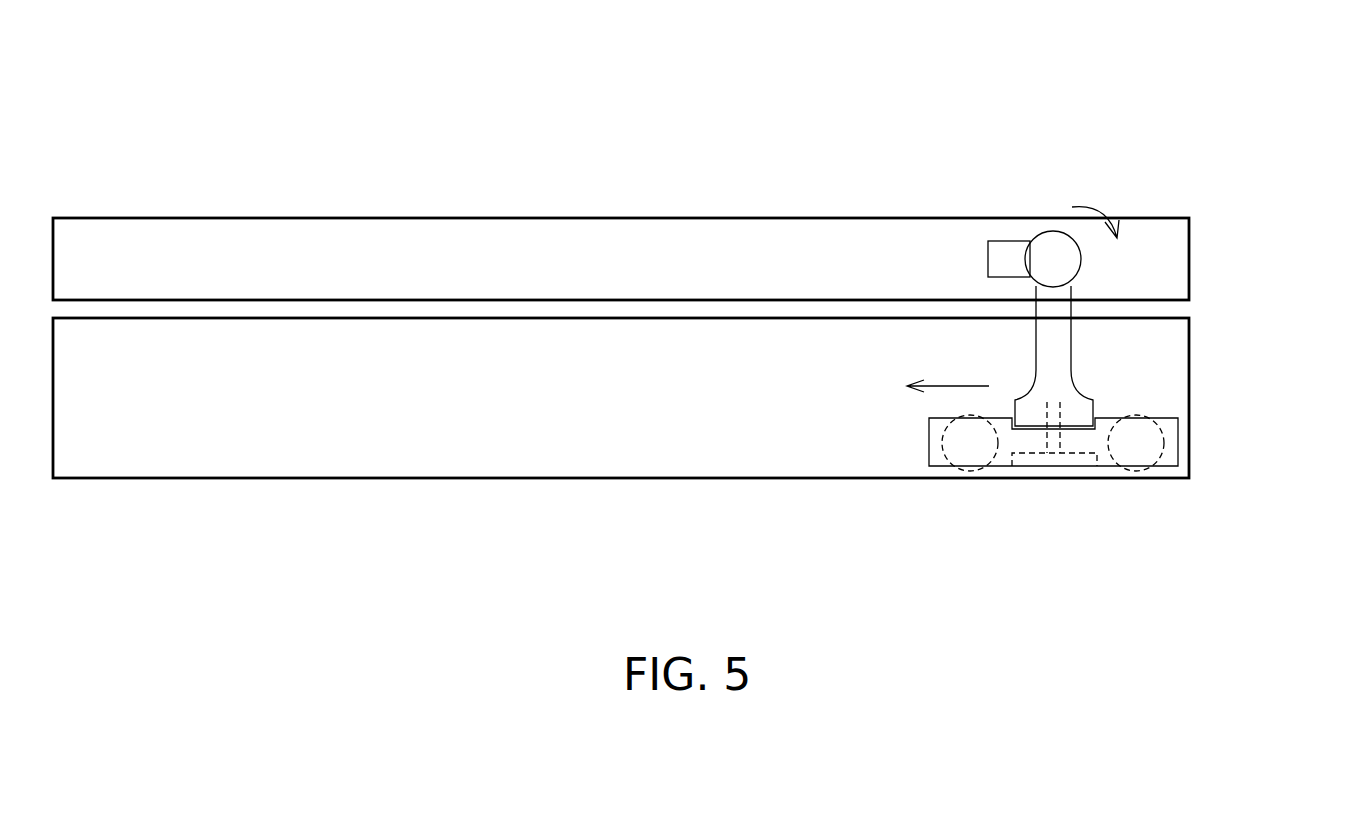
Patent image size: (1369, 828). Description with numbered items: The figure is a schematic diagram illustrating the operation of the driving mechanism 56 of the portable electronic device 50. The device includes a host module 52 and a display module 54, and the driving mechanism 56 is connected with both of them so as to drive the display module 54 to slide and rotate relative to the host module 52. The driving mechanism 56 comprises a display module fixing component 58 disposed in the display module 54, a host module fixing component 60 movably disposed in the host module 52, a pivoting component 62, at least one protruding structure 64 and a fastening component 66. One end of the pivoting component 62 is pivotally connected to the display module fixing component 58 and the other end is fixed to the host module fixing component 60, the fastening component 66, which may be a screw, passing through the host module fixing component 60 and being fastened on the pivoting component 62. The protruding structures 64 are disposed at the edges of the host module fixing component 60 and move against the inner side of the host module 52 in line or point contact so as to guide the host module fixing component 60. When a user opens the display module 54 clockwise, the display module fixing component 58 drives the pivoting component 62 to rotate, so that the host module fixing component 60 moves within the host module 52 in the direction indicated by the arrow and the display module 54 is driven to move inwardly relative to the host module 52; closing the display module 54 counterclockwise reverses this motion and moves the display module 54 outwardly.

The portable electronic device 50 is at (1167, 120).
The host module 52 is at (663, 478).
The display module 54 is at (617, 217).
The driving mechanism 56 is at (1295, 148).
The display module fixing component 58 is at (1005, 247).
The host module fixing component 60 is at (1173, 442).
The pivoting component 62 is at (1068, 262).
The protruding structure 64 is at (1137, 415).
The fastening component 66 is at (1065, 460).